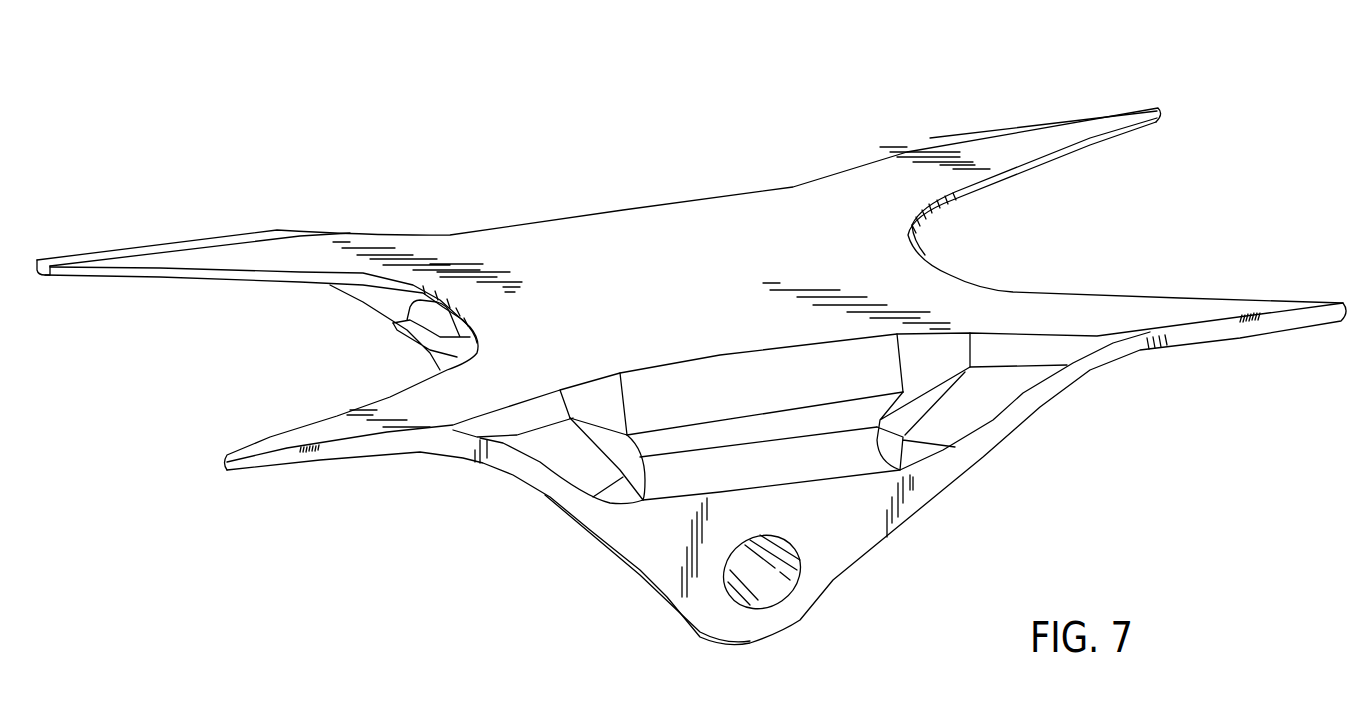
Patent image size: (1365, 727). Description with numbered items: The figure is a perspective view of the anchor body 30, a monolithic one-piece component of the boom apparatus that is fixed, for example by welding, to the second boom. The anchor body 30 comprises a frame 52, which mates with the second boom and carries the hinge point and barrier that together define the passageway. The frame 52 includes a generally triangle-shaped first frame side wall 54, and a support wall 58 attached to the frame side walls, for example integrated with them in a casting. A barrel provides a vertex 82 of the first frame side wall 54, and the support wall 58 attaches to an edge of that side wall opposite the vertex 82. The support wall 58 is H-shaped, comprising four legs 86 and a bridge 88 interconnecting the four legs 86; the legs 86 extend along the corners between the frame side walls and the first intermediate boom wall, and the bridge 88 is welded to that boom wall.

The anchor body 30 is at (355, 93).
The support wall 58 is at (623, 230).
The bridge 88 is at (633, 312).
The legs 86 is at (130, 272).
The frame 52 is at (492, 506).
The first frame side wall 54 is at (860, 528).
The vertex 82 is at (793, 627).